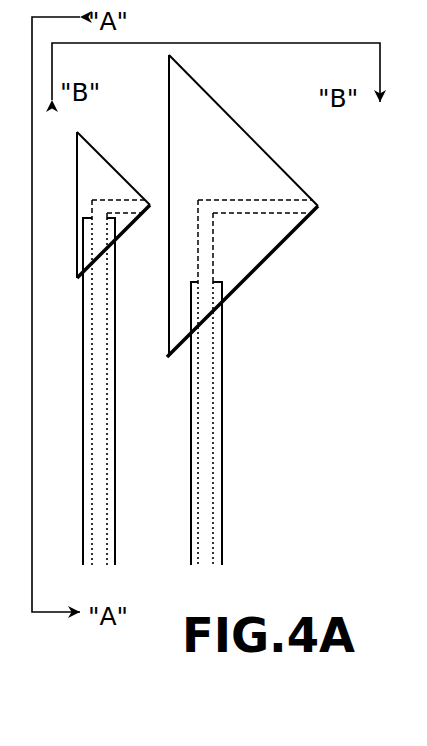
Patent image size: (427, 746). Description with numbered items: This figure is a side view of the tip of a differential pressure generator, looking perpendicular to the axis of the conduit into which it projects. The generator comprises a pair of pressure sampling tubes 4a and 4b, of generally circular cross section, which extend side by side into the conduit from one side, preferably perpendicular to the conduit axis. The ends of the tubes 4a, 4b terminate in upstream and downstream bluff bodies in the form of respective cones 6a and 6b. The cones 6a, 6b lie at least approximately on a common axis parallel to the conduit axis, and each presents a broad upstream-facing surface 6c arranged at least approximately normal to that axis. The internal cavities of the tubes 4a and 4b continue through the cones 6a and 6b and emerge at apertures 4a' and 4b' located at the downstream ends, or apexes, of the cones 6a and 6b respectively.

The pressure sampling tube 4a is at (124, 382).
The pressure sampling tube 4b is at (252, 382).
The aperture 4a' is at (120, 249).
The aperture 4b' is at (263, 281).
The upstream cone 6a is at (117, 167).
The downstream cone 6b is at (264, 147).
The upstream-facing surface 6c is at (168, 81).